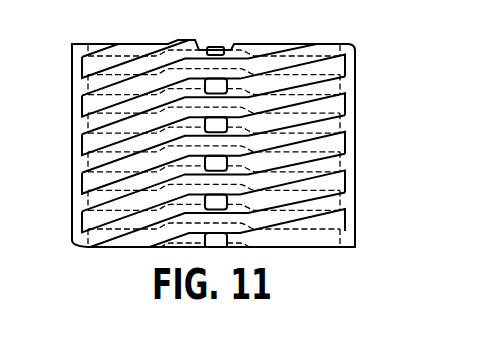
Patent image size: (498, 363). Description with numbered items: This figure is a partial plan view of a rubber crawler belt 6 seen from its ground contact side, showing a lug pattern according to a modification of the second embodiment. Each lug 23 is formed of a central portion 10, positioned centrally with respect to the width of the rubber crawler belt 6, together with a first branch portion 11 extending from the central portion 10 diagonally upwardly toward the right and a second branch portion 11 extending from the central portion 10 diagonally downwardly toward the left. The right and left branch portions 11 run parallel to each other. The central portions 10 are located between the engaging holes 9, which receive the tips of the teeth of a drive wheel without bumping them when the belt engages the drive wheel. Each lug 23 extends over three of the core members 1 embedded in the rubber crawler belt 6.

The core member 1 is at (80, 83).
The rubber crawler belt 6 is at (365, 145).
The engaging hole 9 is at (223, 84).
The central portion 10 is at (191, 58).
The branch portion 11 is at (325, 72).
The lug 23 is at (148, 44).